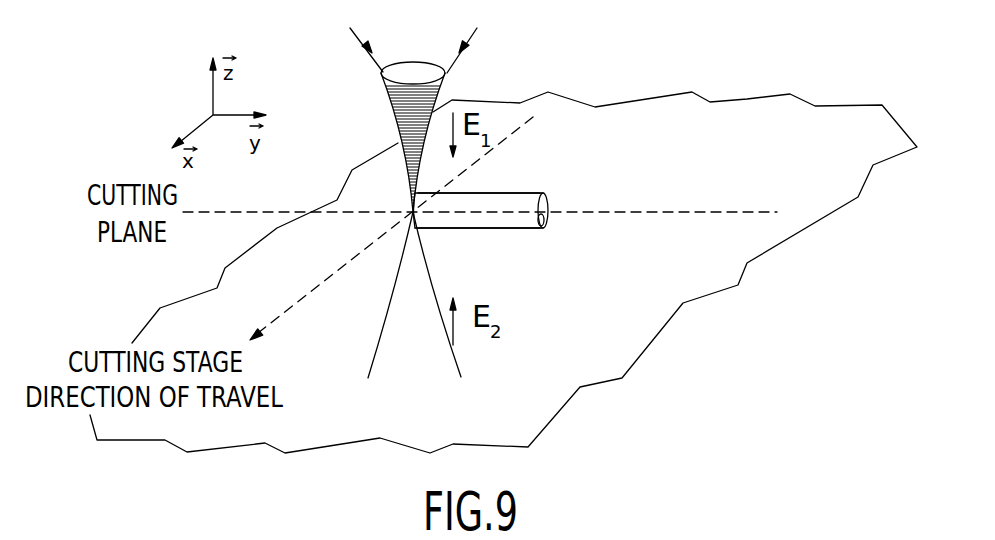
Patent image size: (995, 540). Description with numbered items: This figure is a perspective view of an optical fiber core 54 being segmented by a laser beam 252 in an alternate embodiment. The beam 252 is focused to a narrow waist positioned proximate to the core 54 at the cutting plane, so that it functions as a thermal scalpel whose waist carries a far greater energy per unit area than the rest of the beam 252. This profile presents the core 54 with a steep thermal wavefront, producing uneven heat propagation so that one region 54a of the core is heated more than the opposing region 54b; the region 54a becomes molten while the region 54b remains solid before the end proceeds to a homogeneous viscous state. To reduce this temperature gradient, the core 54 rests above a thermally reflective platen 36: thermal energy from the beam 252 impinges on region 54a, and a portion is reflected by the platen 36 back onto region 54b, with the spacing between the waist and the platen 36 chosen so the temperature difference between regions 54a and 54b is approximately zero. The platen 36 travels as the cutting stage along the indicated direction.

The beam 252 is at (447, 72).
The core 54 is at (532, 191).
The region of the core 54a is at (442, 202).
The opposing region of the core 54b is at (432, 223).
The platen 36 is at (638, 330).